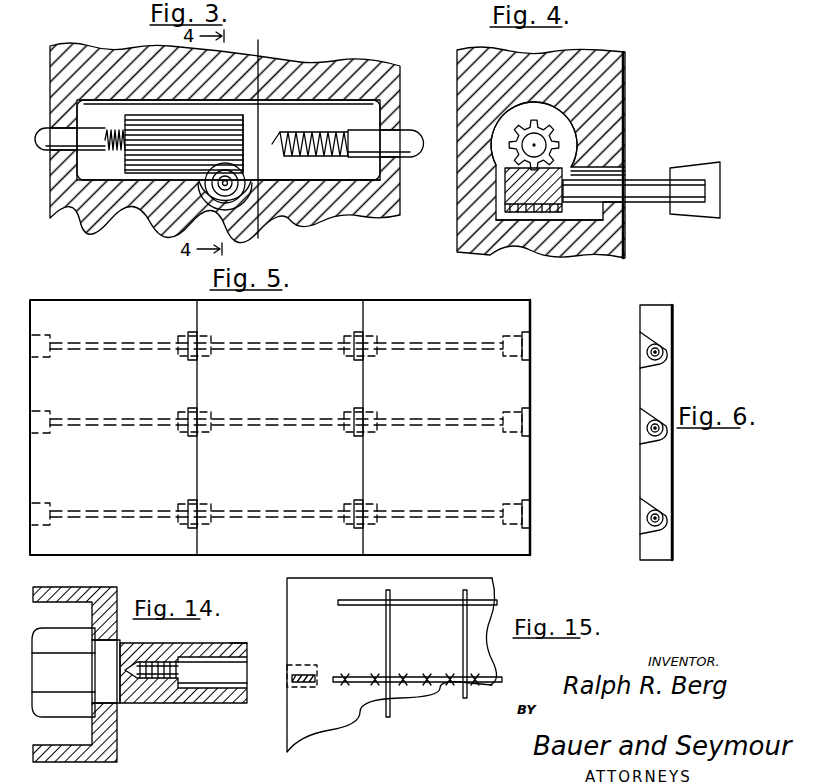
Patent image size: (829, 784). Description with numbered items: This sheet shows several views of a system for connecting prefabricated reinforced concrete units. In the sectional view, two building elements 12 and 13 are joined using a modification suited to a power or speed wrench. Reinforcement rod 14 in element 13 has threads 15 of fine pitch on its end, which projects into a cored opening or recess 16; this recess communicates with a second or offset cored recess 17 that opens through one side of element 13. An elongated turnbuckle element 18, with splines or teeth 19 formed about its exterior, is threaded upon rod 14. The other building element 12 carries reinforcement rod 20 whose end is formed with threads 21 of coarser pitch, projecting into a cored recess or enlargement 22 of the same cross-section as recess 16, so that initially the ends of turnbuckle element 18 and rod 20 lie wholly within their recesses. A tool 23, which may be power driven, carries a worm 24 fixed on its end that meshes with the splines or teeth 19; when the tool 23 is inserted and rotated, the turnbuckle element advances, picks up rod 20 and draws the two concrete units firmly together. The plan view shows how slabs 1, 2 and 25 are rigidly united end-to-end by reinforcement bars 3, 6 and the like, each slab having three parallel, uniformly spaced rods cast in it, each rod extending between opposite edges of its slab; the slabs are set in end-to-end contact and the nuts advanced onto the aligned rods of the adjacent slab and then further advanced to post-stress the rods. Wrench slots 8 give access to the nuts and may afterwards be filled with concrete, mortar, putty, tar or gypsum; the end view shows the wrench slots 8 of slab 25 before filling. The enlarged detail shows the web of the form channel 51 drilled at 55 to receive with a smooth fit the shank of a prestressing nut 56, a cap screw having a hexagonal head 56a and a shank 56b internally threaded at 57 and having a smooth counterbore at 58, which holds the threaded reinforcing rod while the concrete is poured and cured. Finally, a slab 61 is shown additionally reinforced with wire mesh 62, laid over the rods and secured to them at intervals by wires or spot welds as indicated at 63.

In FIG. 5, the slab 1 is at (262, 554).
In FIG. 5, the slab 2 is at (146, 553).
In FIG. 5, the reinforcement bar 3 is at (270, 428).
In FIG. 5, the reinforcement bar 6 is at (84, 426).
In FIG. 5, the wrench slot 8 is at (185, 357).
In FIG. 6, the wrench slot 8 is at (645, 363).
In FIG. 5, the slab 25 is at (525, 476).
In FIG. 6, the slab 25 is at (666, 484).
In FIG. 3, the building element 12 is at (225, 143).
In FIG. 3, the building element 13 is at (110, 214).
In FIG. 4, the building element 13 is at (612, 100).
In FIG. 3, the reinforcement rod 14 is at (50, 128).
In FIG. 3, the threads 15 is at (121, 128).
In FIG. 3, the cored opening or recess 16 is at (82, 173).
In FIG. 4, the cored opening or recess 16 is at (508, 118).
In FIG. 3, the offset cored recess 17 is at (207, 208).
In FIG. 4, the offset cored recess 17 is at (605, 221).
In FIG. 3, the turnbuckle element 18 is at (244, 130).
In FIG. 4, the turnbuckle element 18 is at (557, 154).
In FIG. 3, the splines or teeth 19 is at (178, 113).
In FIG. 4, the splines or teeth 19 is at (546, 120).
In FIG. 3, the reinforcement rod 20 is at (405, 137).
In FIG. 3, the threads 21 is at (345, 134).
In FIG. 3, the cored recess or enlargement 22 is at (328, 181).
In FIG. 4, the tool 23 is at (642, 186).
In FIG. 4, the worm 24 is at (519, 206).
In FIG. 14, the side member 51 is at (75, 596).
In FIG. 14, the drilled web hole 55 is at (120, 703).
In FIG. 14, the prestressing nut 56 is at (195, 715).
In FIG. 14, the hexagonal head 56a is at (57, 636).
In FIG. 14, the shank 56b is at (226, 651).
In FIG. 14, the internal threads 57 is at (165, 661).
In FIG. 14, the smooth counterbore 58 is at (240, 683).
In FIG. 15, the slab 61 is at (348, 720).
In FIG. 15, the wire mesh 62 is at (463, 640).
In FIG. 15, the securing means 63 is at (378, 676).